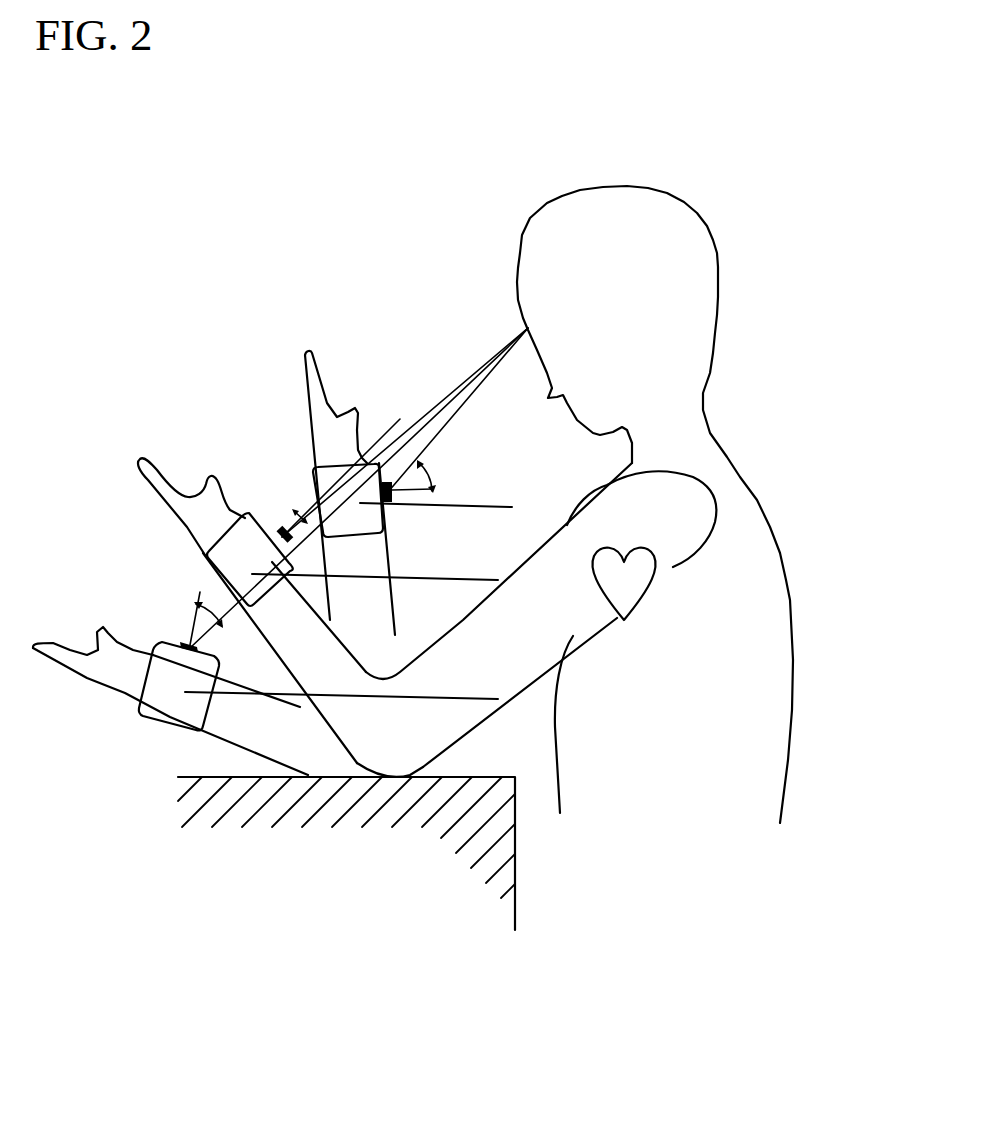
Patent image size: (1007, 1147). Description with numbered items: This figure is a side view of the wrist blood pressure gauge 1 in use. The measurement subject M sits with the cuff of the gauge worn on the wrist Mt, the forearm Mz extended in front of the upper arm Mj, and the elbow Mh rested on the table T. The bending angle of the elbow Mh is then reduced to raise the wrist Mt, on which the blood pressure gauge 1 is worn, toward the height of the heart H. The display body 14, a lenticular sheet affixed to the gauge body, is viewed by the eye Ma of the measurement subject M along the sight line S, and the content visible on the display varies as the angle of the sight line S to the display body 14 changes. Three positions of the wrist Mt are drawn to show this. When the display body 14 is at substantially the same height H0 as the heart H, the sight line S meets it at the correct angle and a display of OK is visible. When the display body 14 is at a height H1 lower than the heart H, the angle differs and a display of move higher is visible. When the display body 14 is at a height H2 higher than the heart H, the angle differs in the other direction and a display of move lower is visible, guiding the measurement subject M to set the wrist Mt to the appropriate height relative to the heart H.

The wrist blood pressure gauge 1 is at (379, 462).
The display body 14 is at (244, 512).
The measurement subject M is at (698, 242).
The eye Ma is at (530, 327).
The wrist Mt is at (314, 453).
The forearm Mz is at (255, 742).
The elbow Mh is at (365, 757).
The upper arm Mj is at (583, 650).
The heart H is at (655, 583).
The height substantially the same as the heart H0 is at (410, 581).
The height lower than the heart H1 is at (371, 712).
The height higher than the heart H2 is at (458, 507).
The sight line S is at (447, 403).
The table T is at (443, 797).